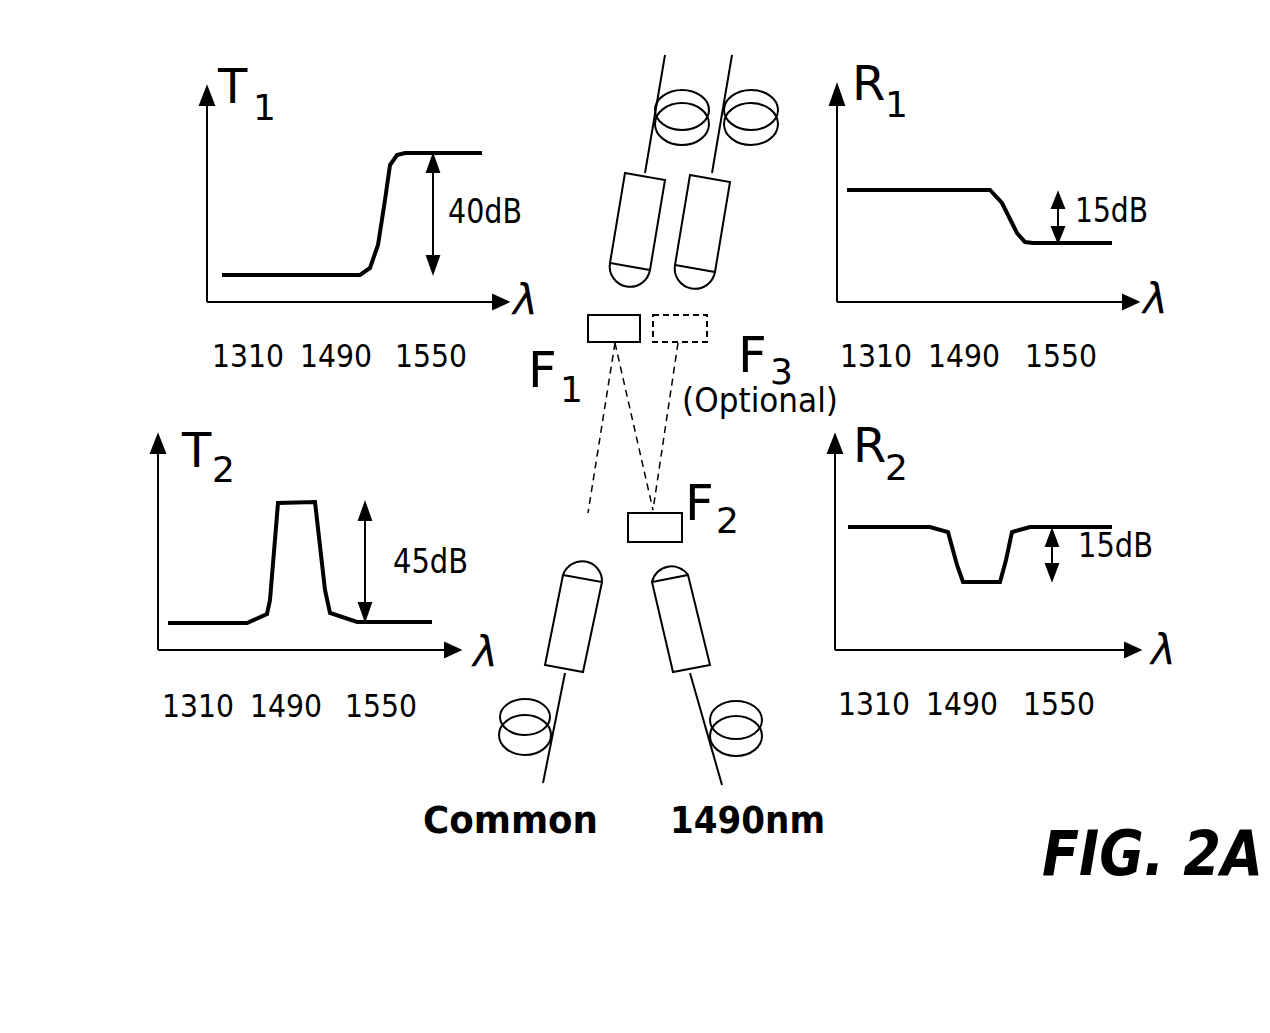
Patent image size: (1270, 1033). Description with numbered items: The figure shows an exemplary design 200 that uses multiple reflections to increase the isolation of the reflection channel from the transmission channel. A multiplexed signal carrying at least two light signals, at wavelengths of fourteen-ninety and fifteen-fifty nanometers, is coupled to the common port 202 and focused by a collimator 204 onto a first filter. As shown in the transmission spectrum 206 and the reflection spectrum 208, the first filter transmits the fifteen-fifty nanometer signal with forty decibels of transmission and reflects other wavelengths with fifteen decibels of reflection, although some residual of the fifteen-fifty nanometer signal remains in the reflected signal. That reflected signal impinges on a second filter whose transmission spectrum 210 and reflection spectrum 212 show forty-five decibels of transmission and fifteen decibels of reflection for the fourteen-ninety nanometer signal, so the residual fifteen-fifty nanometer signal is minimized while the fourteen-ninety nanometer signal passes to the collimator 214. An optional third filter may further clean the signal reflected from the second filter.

The exemplary design 200 is at (635, 171).
The common port 202 is at (553, 733).
The collimator 204 is at (552, 616).
The transmission spectrum 206 is at (352, 214).
The reflection spectrum 208 is at (893, 172).
The transmission spectrum 210 is at (300, 562).
The reflection spectrum 212 is at (980, 529).
The collimator 214 is at (707, 675).